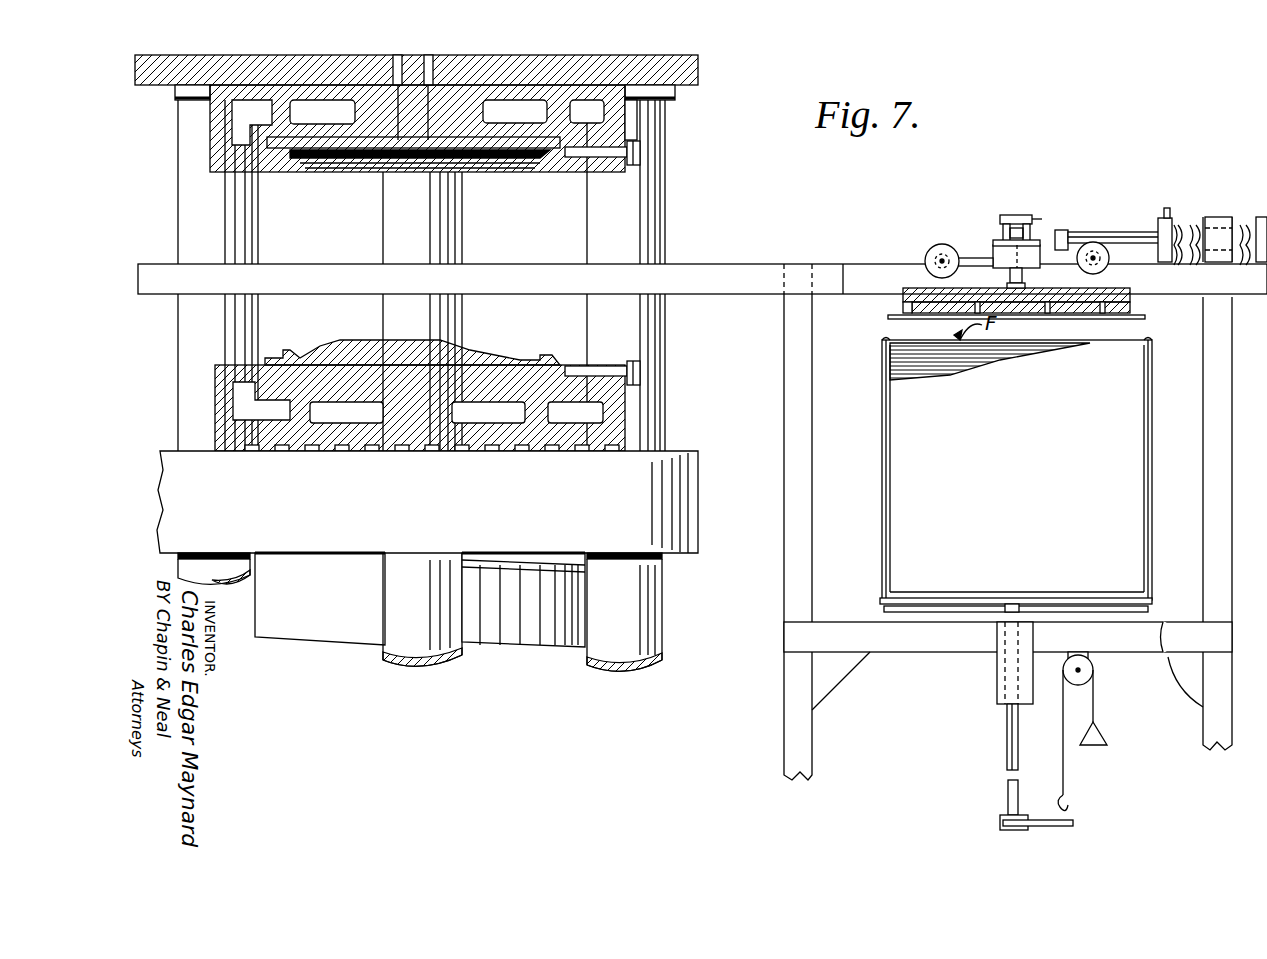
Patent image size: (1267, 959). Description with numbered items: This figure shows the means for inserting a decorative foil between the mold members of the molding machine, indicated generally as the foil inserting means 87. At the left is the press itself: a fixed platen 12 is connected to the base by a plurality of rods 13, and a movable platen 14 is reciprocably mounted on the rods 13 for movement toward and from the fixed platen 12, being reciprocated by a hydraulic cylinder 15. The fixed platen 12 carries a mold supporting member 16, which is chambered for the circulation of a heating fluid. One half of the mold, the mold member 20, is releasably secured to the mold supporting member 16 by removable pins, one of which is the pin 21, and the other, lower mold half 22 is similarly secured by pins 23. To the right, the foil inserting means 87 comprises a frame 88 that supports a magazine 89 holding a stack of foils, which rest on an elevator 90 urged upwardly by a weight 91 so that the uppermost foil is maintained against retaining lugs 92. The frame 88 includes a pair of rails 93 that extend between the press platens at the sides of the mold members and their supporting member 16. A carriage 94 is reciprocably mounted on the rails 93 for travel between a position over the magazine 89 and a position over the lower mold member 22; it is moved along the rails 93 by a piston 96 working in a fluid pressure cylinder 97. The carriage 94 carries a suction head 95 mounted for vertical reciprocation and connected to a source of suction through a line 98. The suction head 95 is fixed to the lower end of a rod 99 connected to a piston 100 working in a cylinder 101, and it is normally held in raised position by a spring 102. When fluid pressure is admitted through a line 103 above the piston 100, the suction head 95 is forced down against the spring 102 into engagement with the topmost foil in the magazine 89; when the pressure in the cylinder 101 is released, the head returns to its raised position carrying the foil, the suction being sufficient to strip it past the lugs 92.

The fixed platen 12 is at (690, 88).
The rods 13 is at (178, 407).
The movable platen 14 is at (698, 517).
The hydraulic cylinder 15 is at (582, 589).
The mold supporting member 16 is at (627, 123).
The mold member 20 is at (278, 172).
The removable pin 21 is at (630, 167).
The mold half 22 is at (312, 340).
The pins 23 is at (643, 374).
The foil inserting means 87 is at (1238, 338).
The frame 88 is at (1022, 537).
The magazine 89 is at (882, 496).
The elevator 90 is at (1140, 598).
The weight 91 is at (1107, 742).
The retaining lugs 92 is at (882, 338).
The rails 93 is at (768, 264).
The carriage 94 is at (968, 252).
The suction head 95 is at (903, 298).
The piston 96 is at (1118, 232).
The fluid pressure cylinder 97 is at (1192, 225).
The suction line 98 is at (1130, 305).
The rod 99 is at (1024, 277).
The piston 100 is at (1017, 215).
The cylinder 101 is at (996, 230).
The spring 102 is at (1040, 243).
The pressure line 103 is at (1022, 240).